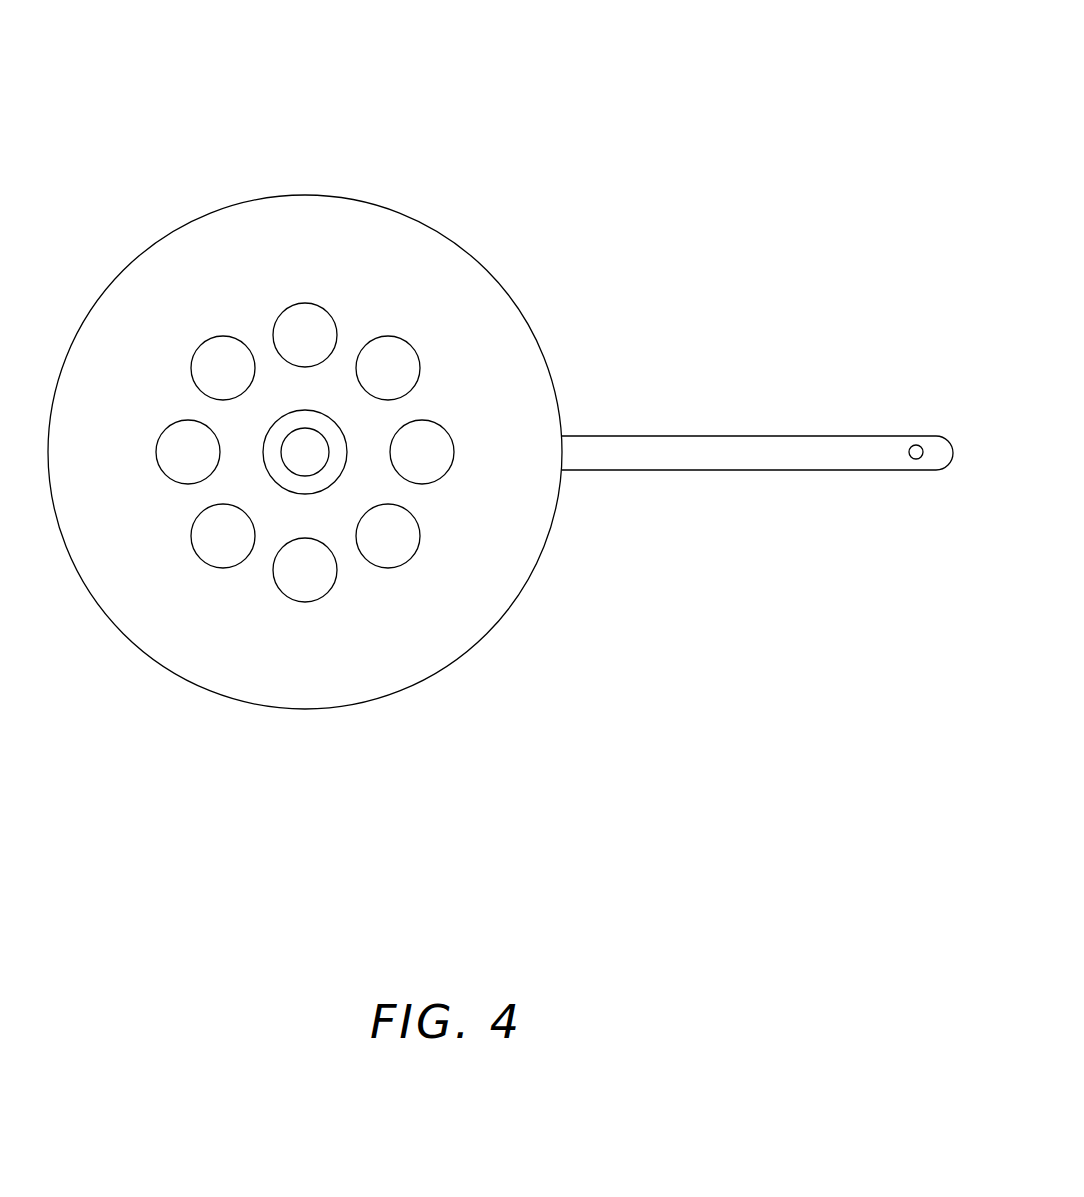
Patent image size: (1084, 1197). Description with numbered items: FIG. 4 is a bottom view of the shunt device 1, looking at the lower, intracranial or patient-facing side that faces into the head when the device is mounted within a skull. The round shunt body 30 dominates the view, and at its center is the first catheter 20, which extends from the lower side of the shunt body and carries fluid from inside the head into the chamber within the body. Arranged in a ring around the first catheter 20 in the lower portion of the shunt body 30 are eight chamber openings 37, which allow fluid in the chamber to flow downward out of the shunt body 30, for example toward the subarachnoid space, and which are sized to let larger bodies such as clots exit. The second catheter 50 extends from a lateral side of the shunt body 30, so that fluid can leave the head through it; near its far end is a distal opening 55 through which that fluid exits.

The shunt device 1 is at (648, 130).
The first catheter 20 is at (273, 480).
The shunt body 30 is at (130, 231).
The chamber openings 37 is at (388, 536).
The second catheter 50 is at (834, 433).
The distal openings 55 is at (913, 460).